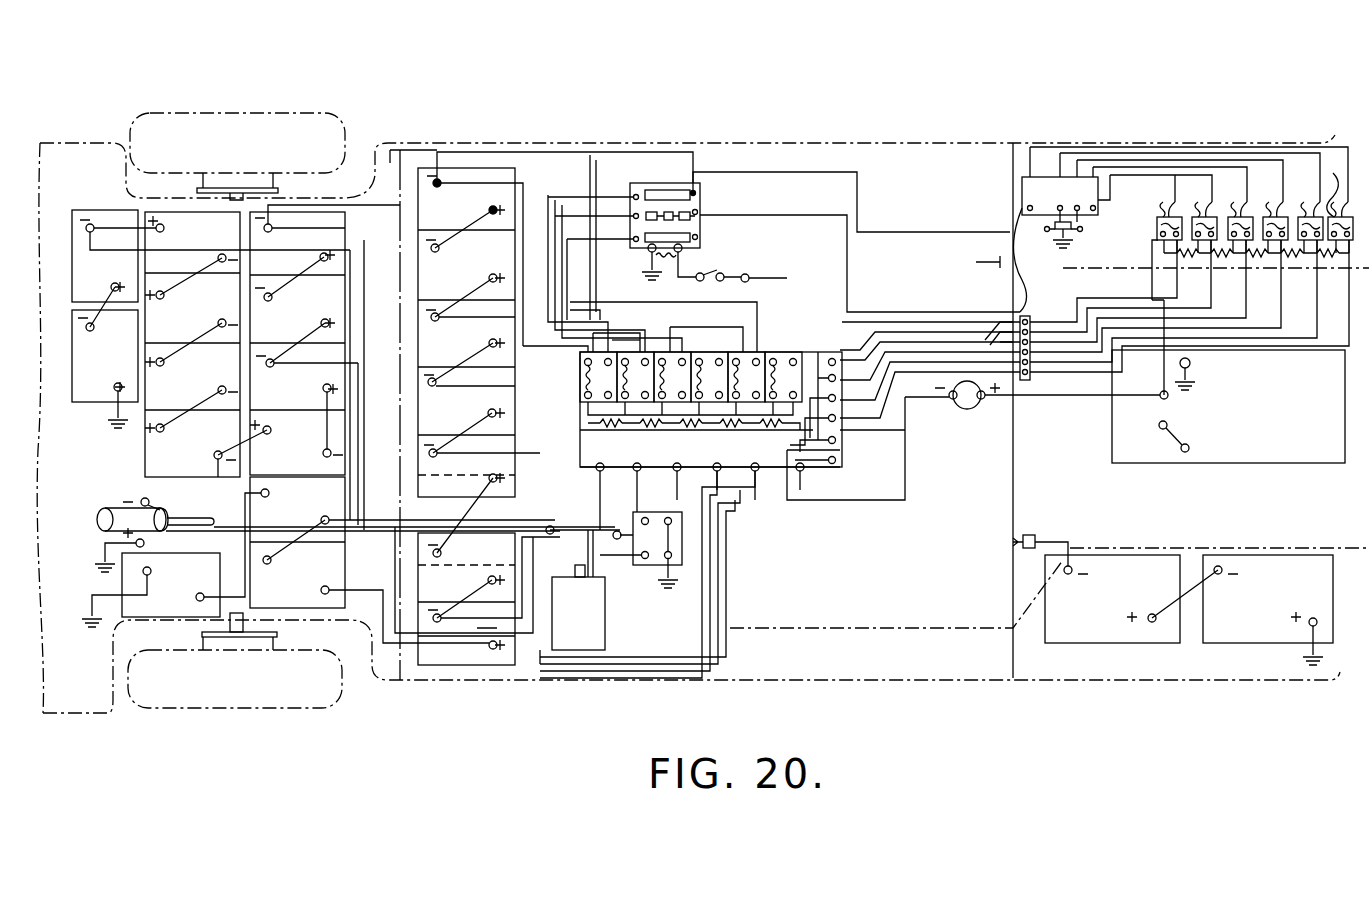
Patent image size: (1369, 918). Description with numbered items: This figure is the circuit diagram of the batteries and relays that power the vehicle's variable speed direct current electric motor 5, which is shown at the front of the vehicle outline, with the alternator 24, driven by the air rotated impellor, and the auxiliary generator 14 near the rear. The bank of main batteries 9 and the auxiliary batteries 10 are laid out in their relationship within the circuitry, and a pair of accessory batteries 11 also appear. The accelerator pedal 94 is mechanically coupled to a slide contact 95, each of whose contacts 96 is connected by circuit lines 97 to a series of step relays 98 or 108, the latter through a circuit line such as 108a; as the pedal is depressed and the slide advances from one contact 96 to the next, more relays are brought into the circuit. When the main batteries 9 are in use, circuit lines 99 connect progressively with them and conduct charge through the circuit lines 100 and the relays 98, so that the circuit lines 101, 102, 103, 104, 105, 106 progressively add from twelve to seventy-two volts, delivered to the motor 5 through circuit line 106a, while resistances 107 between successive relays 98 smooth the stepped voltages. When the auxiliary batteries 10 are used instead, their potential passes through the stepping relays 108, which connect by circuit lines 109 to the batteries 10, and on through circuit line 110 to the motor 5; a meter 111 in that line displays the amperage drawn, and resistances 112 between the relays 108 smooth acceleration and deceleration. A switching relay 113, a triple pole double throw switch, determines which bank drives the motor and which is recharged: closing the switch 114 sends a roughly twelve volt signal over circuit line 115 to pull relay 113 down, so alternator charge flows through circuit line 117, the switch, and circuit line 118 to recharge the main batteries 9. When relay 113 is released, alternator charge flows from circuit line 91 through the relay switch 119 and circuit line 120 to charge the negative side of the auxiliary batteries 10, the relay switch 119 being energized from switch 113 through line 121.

The variable speed direct current electric motor 5 is at (1268, 464).
The main batteries 9 is at (78, 272).
The auxiliary batteries 10 is at (450, 494).
The accessory batteries 11 is at (1173, 600).
The auxiliary generator 14 is at (104, 536).
The alternator 24 is at (604, 614).
The circuit line 91 is at (594, 574).
The accelerator pedal 94 is at (990, 296).
The slide contact 95 is at (1022, 208).
The contacts 96 is at (1034, 231).
The circuit lines 97 is at (1168, 154).
The step relays 98 is at (1332, 148).
The circuit lines 99 is at (400, 238).
The circuit lines 100 is at (956, 358).
The circuit line 101 is at (1068, 300).
The circuit line 102 is at (1064, 372).
The circuit line 103 is at (1072, 372).
The circuit line 104 is at (1078, 382).
The circuit line 105 is at (1080, 390).
The circuit line 106 is at (1096, 436).
The circuit line 106a is at (1188, 362).
The resistances 107 is at (1254, 254).
The stepping relays 108 is at (760, 348).
The circuit line 108a is at (736, 342).
The circuit lines 109 is at (638, 296).
The circuit line 110 is at (904, 500).
The meter 111 is at (960, 406).
The resistances 112 is at (640, 434).
The switching relay 113 is at (712, 248).
The switch 114 is at (724, 274).
The circuit line 115 is at (754, 278).
The circuit line 117 is at (548, 204).
The circuit line 118 is at (700, 158).
The relay switch 119 is at (668, 568).
The circuit line 120 is at (553, 172).
The line 121 is at (606, 204).